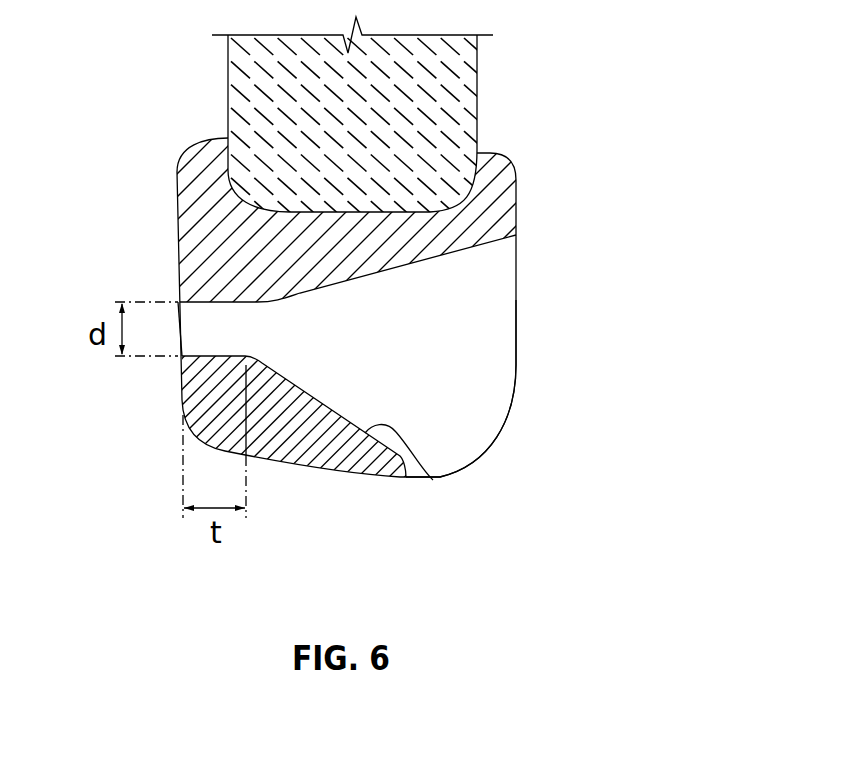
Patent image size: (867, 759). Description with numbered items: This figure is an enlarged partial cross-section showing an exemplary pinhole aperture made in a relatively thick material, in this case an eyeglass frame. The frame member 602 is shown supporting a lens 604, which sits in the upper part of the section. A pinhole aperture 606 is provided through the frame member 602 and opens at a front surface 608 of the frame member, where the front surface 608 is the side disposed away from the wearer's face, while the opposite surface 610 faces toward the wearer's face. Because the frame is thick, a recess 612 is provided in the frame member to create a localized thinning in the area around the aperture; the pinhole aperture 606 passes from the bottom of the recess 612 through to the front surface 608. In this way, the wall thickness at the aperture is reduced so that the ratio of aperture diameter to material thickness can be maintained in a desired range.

The frame member 602 is at (512, 160).
The lens 604 is at (477, 52).
The pinhole aperture 606 is at (197, 357).
The front surface 608 is at (177, 185).
The surface facing the wearer's face 610 is at (516, 372).
The recess 612 is at (433, 480).